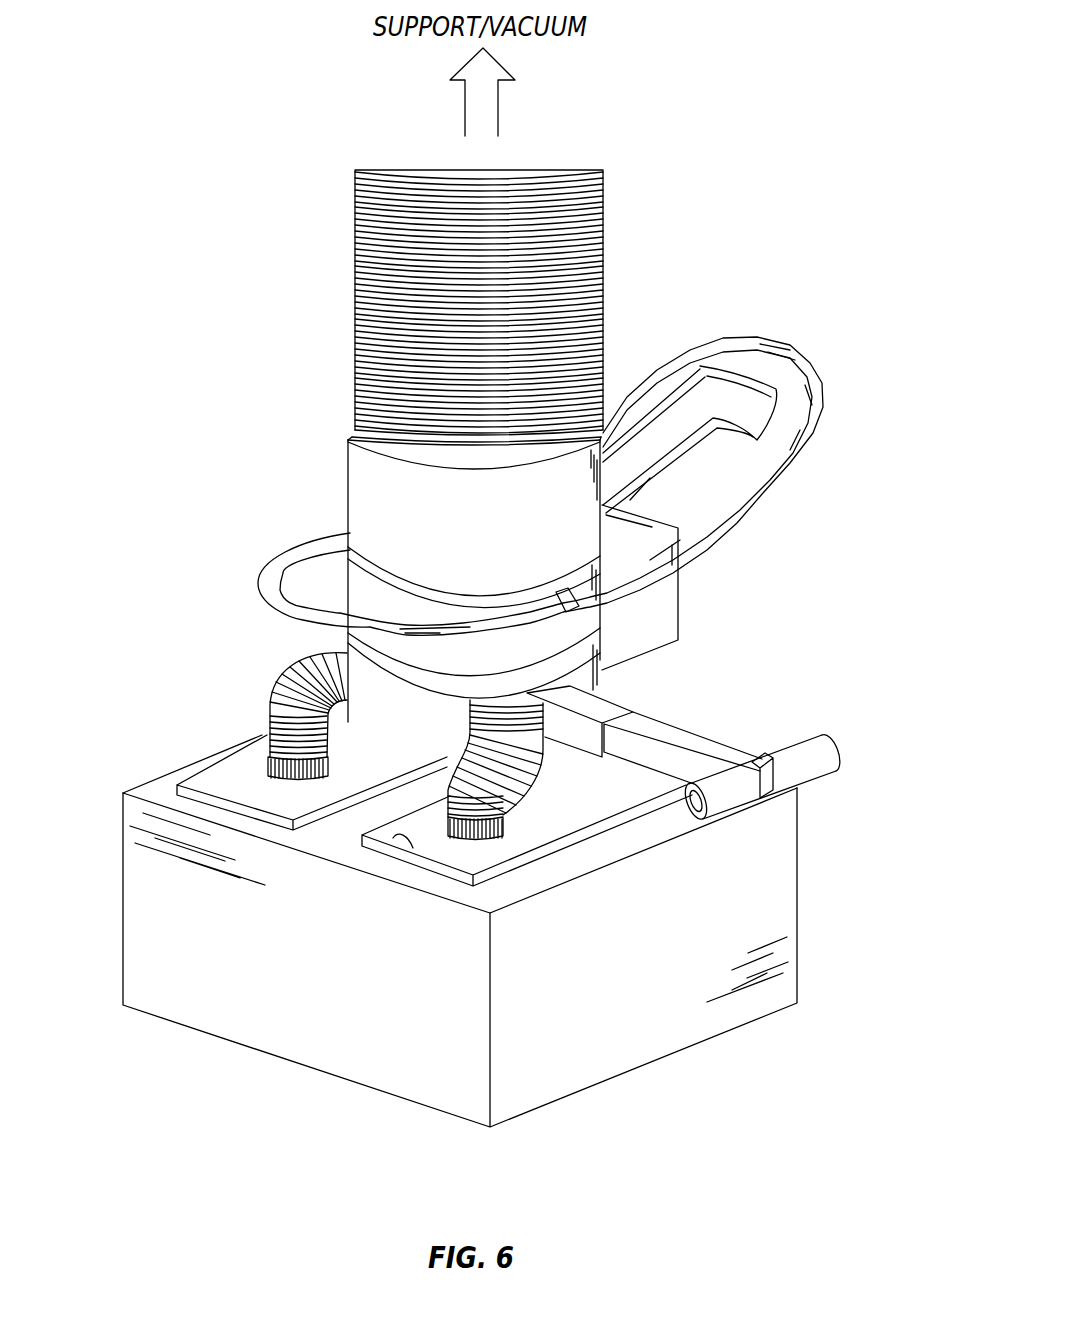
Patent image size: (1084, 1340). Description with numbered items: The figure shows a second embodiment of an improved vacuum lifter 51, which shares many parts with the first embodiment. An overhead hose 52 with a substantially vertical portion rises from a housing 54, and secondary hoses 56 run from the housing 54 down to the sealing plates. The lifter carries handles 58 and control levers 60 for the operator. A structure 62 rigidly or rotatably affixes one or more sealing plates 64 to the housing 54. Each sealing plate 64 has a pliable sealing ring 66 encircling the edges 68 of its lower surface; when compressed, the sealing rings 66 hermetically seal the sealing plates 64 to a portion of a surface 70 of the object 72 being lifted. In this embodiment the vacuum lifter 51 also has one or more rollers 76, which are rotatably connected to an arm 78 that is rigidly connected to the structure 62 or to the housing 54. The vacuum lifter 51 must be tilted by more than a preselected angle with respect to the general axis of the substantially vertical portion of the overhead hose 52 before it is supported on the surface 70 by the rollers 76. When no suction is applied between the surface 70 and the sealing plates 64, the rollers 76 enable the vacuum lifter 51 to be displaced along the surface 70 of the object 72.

The vacuum lifter 51 is at (835, 530).
The overhead hose 52 is at (607, 268).
The housing 54 is at (350, 653).
The secondary hoses 56 is at (288, 664).
The handles 58 is at (272, 567).
The control levers 60 is at (715, 418).
The structure 62 is at (612, 711).
The sealing plates 64 is at (213, 777).
The pliable sealing ring 66 is at (440, 837).
The edges 68 is at (372, 820).
The surface 70 is at (150, 792).
The object 72 is at (546, 1088).
The rollers 76 is at (820, 752).
The arm 78 is at (680, 740).